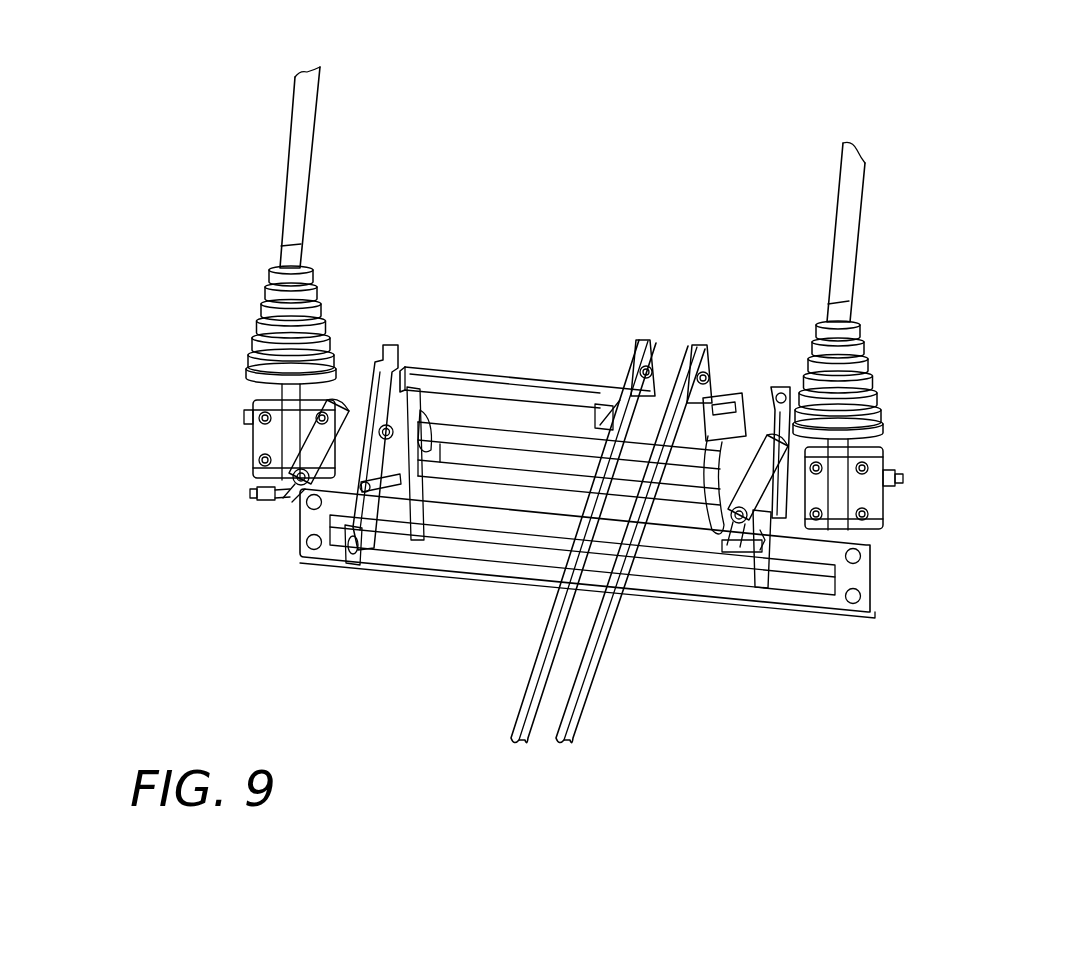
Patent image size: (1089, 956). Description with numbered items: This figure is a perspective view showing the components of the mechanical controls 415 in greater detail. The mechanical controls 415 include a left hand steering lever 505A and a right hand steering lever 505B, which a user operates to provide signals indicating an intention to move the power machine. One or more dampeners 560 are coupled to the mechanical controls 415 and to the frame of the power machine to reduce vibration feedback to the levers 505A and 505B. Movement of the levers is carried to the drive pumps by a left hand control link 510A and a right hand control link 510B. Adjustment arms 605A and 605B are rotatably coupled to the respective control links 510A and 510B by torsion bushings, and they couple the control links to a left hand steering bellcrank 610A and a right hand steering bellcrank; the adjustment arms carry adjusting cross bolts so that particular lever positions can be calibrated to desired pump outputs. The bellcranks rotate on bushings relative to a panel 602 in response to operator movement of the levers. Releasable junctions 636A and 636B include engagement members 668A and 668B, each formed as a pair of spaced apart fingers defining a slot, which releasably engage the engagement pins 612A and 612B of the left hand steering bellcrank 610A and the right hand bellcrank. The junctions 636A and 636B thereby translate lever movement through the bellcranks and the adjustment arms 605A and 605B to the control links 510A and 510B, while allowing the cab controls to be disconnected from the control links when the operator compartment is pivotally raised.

The mechanical controls 415 is at (578, 208).
The left hand steering lever 505A is at (312, 148).
The right hand steering lever 505B is at (843, 181).
The left hand control link 510A is at (547, 615).
The right hand control link 510B is at (605, 630).
The dampener 560 is at (875, 450).
The panel 602 is at (873, 615).
The left adjustment arm 605A is at (638, 340).
The right adjustment arm 605B is at (697, 345).
The left hand steering bellcrank 610A is at (422, 455).
The engagement pin 612A is at (384, 555).
The engagement pin 612B is at (730, 531).
The releasable junction 636A is at (268, 612).
The releasable junction 636B is at (872, 657).
The engagement member 668A is at (358, 562).
The engagement member 668B is at (770, 568).